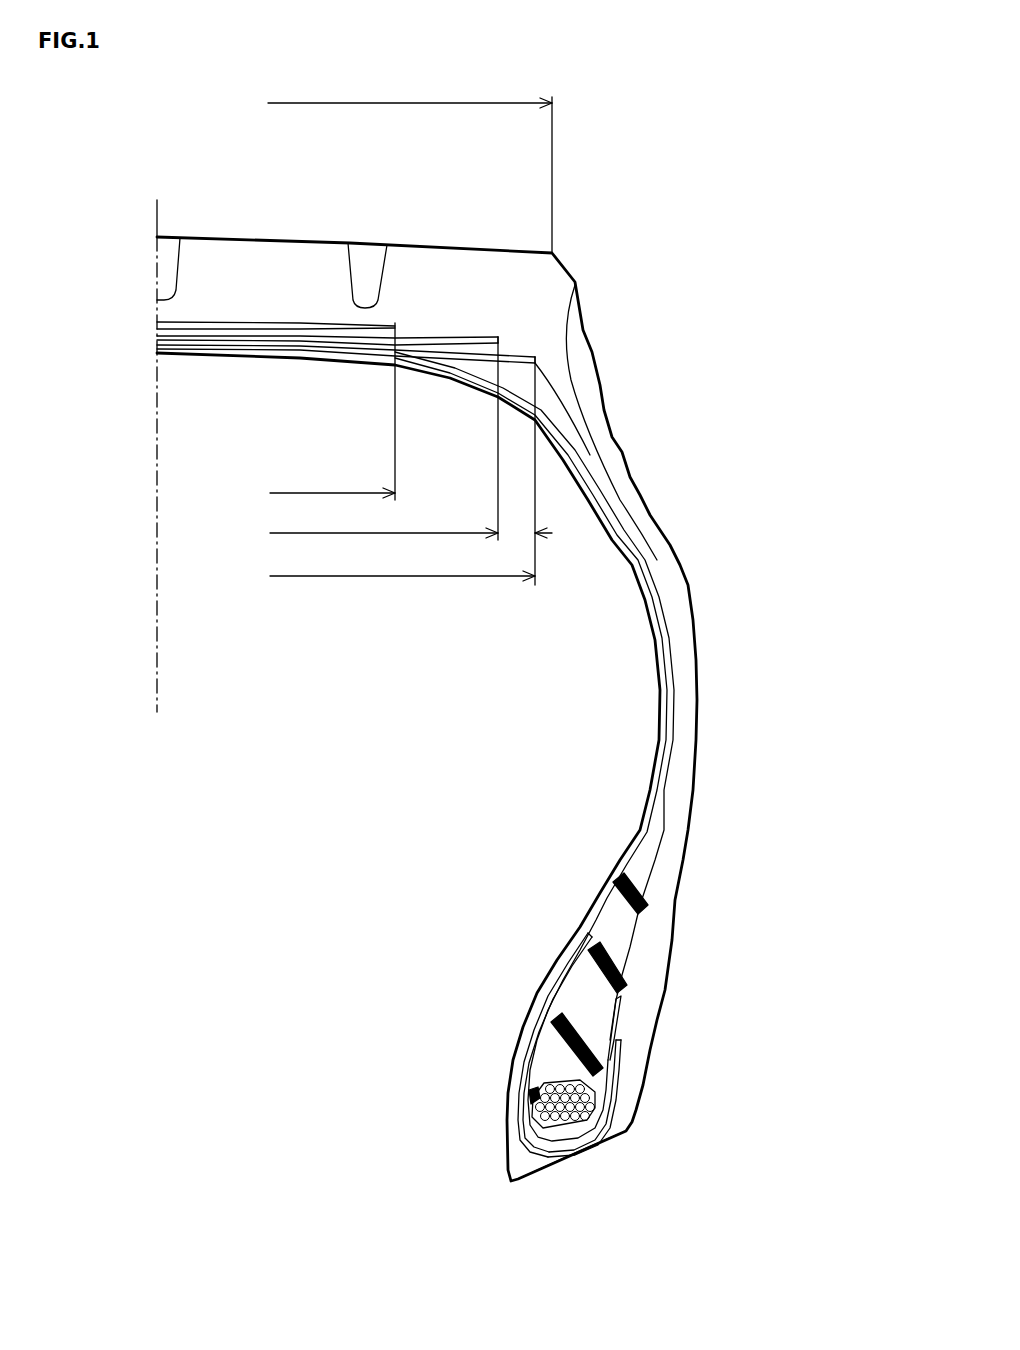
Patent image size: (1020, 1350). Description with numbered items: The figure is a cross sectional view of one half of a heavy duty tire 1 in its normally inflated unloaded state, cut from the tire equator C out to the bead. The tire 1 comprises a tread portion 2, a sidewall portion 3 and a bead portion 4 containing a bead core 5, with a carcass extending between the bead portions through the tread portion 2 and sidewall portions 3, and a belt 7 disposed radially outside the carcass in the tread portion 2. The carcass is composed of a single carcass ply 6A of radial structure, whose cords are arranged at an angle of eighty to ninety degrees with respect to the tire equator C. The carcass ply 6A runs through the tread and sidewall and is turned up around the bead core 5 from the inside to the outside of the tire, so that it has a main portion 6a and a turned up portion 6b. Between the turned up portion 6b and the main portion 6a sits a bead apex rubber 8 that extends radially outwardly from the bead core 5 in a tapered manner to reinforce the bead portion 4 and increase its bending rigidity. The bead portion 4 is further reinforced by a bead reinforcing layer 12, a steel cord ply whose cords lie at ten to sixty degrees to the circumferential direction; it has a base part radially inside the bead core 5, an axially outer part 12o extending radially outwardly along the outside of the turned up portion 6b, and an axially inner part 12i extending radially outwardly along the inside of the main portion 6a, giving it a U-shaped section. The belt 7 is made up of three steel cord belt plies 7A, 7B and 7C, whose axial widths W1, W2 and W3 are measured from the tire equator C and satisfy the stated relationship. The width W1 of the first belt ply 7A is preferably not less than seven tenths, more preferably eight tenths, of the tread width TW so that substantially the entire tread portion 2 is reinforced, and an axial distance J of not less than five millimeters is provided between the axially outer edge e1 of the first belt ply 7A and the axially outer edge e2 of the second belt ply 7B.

The heavy duty tire 1 is at (611, 232).
The tread portion 2 is at (262, 230).
The sidewall portion 3 is at (710, 647).
The bead portion 4 is at (492, 1100).
The bead core 5 is at (562, 1108).
The carcass ply 6A is at (752, 902).
The main portion 6a is at (664, 790).
The turned up portion 6b is at (623, 1010).
The belt 7 is at (92, 304).
The first belt ply 7A is at (170, 341).
The second belt ply 7B is at (170, 333).
The third belt ply 7C is at (170, 324).
The bead apex rubber 8 is at (625, 930).
The bead reinforcing layer 12 is at (622, 1043).
The axially inner part 12i is at (562, 988).
The axially outer part 12o is at (615, 1073).
The tire equator C is at (154, 444).
The tread width TW is at (387, 173).
The axial width of the first belt ply W1 is at (381, 578).
The axial width of the second belt ply W2 is at (363, 535).
The axial width of the third belt ply W3 is at (311, 415).
The axial distance J is at (530, 535).
The axially outer edge of the first belt ply e1 is at (542, 353).
The axially outer edge of the second belt ply e2 is at (498, 330).